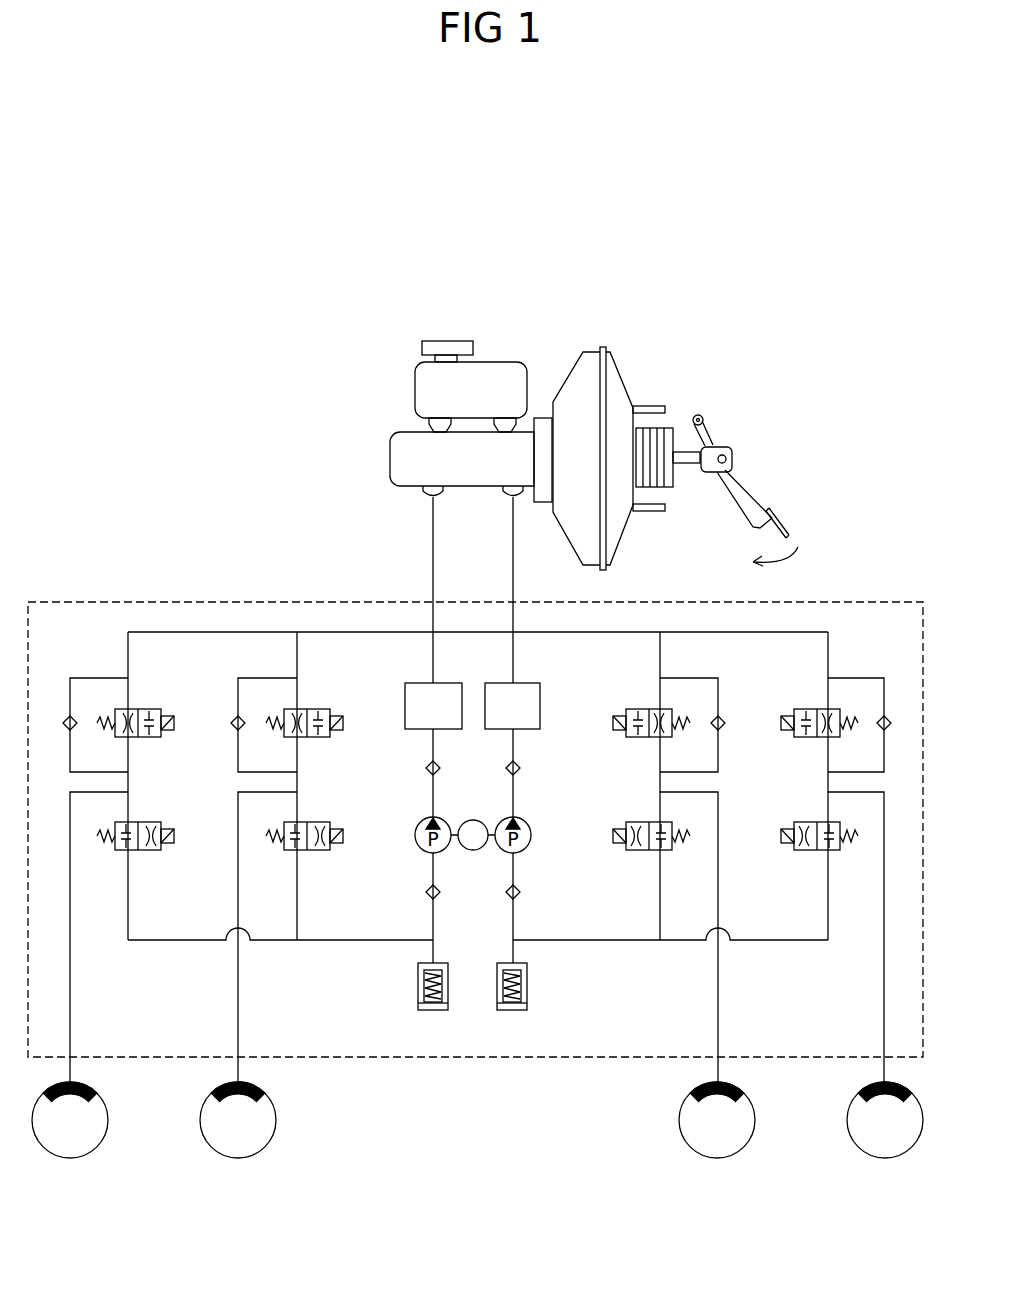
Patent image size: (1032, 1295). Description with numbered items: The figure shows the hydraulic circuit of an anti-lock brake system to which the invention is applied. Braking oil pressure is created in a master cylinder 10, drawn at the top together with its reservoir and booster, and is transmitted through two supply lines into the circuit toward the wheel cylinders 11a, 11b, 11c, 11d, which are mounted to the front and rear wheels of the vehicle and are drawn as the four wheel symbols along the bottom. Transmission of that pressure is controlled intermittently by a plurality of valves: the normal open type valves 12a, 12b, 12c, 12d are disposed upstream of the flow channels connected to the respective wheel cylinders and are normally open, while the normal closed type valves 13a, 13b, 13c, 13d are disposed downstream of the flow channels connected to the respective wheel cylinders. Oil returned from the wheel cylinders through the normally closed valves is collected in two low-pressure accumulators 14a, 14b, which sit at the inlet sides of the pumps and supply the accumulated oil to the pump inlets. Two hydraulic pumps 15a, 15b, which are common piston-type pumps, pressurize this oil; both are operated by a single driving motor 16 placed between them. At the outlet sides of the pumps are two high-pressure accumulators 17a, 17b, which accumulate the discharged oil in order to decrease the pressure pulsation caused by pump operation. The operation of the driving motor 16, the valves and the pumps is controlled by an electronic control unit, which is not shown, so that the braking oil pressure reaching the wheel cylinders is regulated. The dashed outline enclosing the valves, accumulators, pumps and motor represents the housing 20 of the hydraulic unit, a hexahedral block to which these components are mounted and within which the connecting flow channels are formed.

The master cylinder 10 is at (388, 461).
The wheel cylinder 11a is at (92, 1086).
The wheel cylinder 11b is at (260, 1086).
The wheel cylinder 11c is at (697, 1088).
The wheel cylinder 11d is at (863, 1088).
The normal open type valve 12a is at (156, 708).
The normal open type valve 12b is at (326, 708).
The normal open type valve 12c is at (632, 708).
The normal open type valve 12d is at (800, 708).
The normal closed type valve 13a is at (155, 820).
The normal closed type valve 13b is at (326, 820).
The normal closed type valve 13c is at (632, 820).
The normal closed type valve 13d is at (800, 820).
The low-pressure accumulator 14a is at (418, 987).
The low-pressure accumulator 14b is at (528, 987).
The hydraulic pump 15a is at (416, 823).
The hydraulic pump 15b is at (530, 823).
The driving motor 16 is at (473, 820).
The high-pressure accumulator 17a is at (405, 698).
The high-pressure accumulator 17b is at (540, 698).
The housing 20 is at (850, 600).